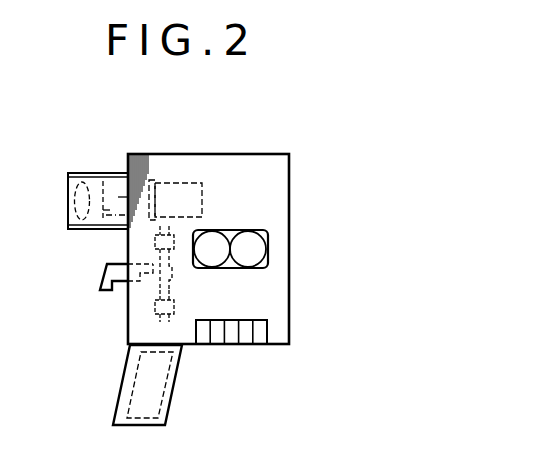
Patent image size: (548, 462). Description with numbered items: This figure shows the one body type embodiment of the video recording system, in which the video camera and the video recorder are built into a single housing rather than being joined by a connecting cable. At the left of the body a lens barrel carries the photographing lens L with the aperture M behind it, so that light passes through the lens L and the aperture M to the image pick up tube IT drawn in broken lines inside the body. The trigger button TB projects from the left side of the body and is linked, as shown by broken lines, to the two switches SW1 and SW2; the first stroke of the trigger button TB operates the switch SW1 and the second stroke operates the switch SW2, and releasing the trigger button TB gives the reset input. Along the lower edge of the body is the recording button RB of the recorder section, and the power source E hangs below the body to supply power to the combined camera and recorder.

The photographing lens L is at (82, 182).
The aperture M is at (104, 183).
The image pick up tube IT is at (177, 182).
The switch (first switching input) SW1 is at (175, 238).
The switch (second switching input) SW2 is at (174, 302).
The trigger button TB is at (108, 280).
The recording button RB is at (217, 345).
The power source E is at (165, 388).